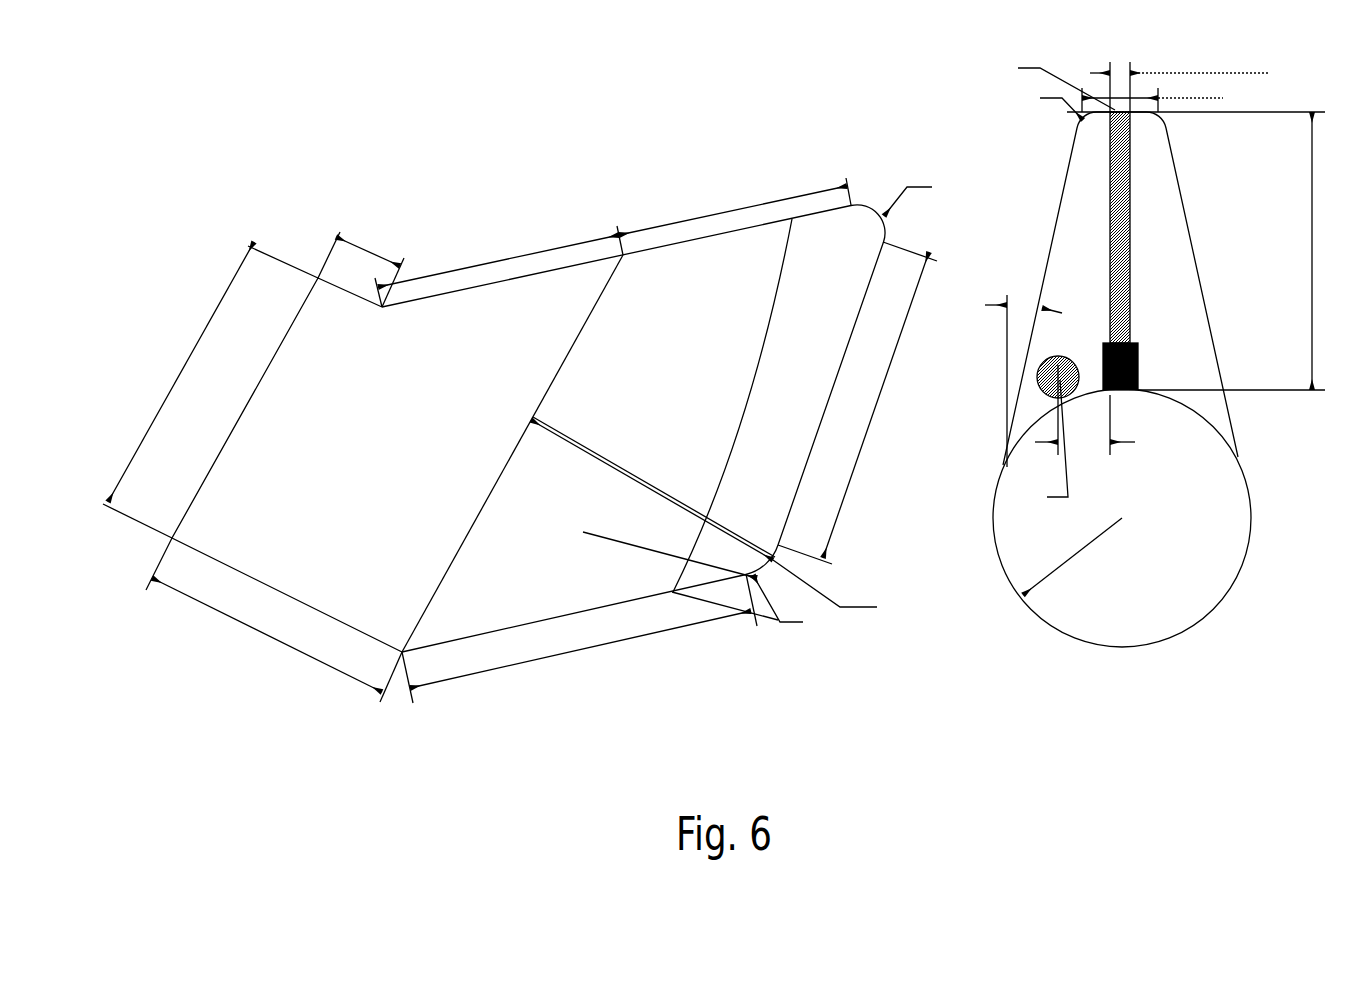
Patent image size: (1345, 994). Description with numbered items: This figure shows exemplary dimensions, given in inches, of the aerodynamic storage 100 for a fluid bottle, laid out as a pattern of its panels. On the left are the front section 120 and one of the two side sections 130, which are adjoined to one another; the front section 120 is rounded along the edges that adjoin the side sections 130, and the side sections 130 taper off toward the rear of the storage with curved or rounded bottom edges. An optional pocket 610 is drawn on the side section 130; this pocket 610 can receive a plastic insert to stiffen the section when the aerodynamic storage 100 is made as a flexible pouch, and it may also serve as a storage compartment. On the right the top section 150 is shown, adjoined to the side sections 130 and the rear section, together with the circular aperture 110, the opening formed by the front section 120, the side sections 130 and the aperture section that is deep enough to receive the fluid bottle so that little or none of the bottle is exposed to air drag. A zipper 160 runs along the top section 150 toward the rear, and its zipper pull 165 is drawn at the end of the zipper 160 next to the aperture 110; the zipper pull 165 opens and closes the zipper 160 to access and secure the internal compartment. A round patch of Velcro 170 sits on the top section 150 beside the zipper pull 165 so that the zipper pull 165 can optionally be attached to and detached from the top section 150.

The aerodynamic storage 100 is at (536, 150).
The aperture 110 is at (1185, 532).
The front section 120 is at (383, 447).
The side section 130 is at (683, 382).
The top section 150 is at (1075, 247).
The zipper 160 is at (1127, 213).
The zipper pull 165 is at (1130, 363).
The Velcro 170 is at (1043, 387).
The pocket 610 is at (792, 219).